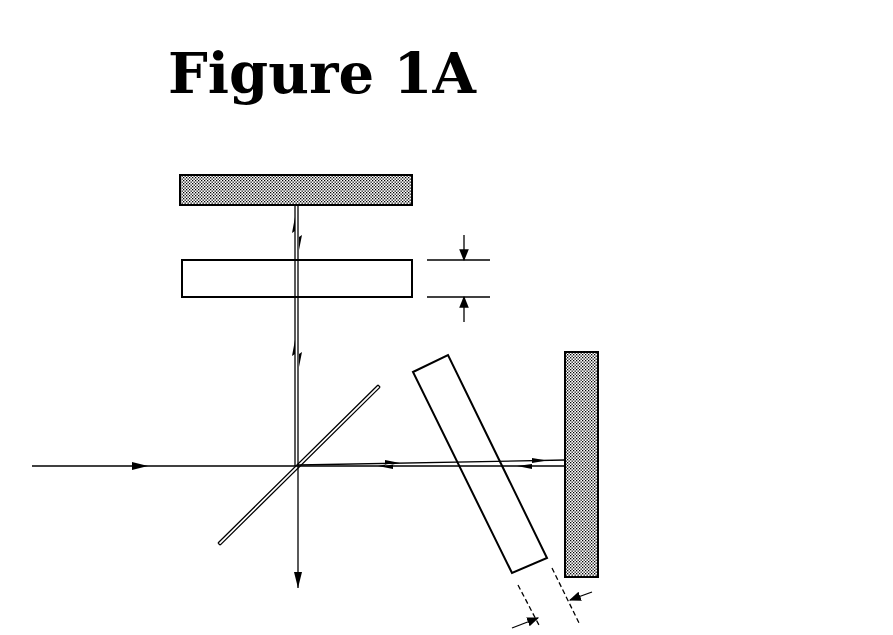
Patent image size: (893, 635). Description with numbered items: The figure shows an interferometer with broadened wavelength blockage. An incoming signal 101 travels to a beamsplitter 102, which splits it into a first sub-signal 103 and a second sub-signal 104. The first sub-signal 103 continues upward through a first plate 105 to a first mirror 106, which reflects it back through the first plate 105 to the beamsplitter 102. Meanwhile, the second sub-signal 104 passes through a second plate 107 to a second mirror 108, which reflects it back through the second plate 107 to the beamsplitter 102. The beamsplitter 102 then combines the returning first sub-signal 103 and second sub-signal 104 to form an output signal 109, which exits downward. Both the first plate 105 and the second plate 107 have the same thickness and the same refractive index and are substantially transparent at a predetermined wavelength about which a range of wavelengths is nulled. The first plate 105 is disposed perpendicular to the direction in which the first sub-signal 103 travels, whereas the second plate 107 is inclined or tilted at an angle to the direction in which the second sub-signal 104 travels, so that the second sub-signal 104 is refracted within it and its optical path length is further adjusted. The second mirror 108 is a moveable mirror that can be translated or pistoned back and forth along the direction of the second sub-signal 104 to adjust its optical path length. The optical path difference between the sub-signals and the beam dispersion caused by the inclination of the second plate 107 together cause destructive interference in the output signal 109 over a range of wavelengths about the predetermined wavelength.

The incoming signal 101 is at (133, 468).
The beamsplitter 102 is at (218, 545).
The first sub-signal 103 is at (297, 350).
The second sub-signal 104 is at (384, 469).
The first plate 105 is at (182, 278).
The first mirror 106 is at (182, 193).
The second plate 107 is at (494, 540).
The second mirror 108 is at (598, 545).
The output signal 109 is at (302, 585).